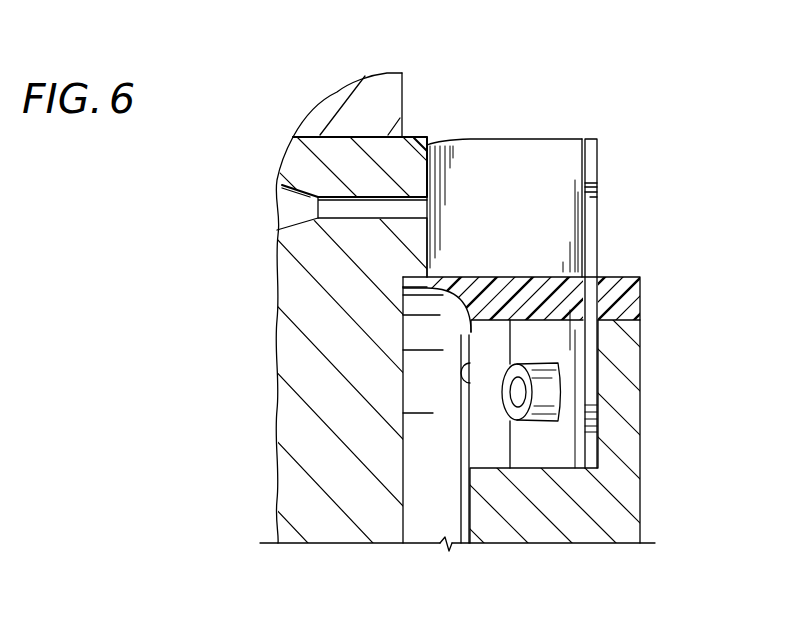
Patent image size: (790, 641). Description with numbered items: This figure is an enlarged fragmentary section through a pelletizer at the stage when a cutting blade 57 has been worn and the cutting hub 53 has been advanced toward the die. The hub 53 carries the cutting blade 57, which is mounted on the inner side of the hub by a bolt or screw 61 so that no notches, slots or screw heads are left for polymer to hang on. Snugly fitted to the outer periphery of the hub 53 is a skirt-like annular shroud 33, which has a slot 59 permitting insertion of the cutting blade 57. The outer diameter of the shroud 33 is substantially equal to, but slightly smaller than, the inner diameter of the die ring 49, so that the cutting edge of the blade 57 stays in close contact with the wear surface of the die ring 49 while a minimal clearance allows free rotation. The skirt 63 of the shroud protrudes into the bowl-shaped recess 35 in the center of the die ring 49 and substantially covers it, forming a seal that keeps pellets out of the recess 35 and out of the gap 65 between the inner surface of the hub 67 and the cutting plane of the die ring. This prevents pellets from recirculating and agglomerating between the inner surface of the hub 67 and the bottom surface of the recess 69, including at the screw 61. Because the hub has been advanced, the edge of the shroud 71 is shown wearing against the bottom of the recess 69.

The shroud 33 is at (640, 290).
The bowl-shaped recess 35 is at (421, 510).
The die ring 49 is at (417, 143).
The hub 53 is at (615, 505).
The cutting blade 57 is at (540, 158).
The slot 59 is at (602, 294).
The screw 61 is at (555, 396).
The skirt 63 is at (403, 280).
The gap 65 is at (453, 520).
The inner surface of the hub 67 is at (466, 362).
The bottom surface of the recess 69 is at (403, 399).
The edge of the shroud 71 is at (403, 295).